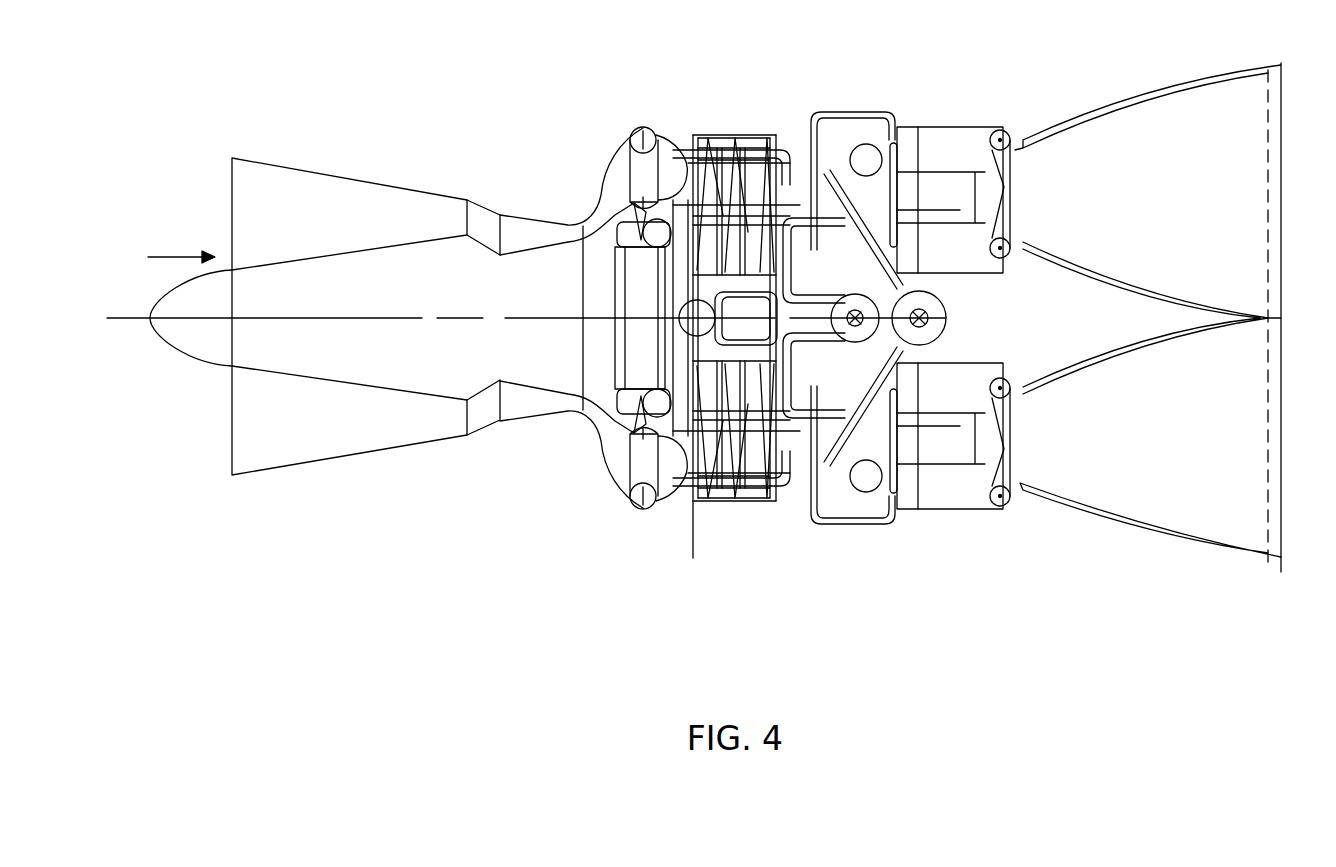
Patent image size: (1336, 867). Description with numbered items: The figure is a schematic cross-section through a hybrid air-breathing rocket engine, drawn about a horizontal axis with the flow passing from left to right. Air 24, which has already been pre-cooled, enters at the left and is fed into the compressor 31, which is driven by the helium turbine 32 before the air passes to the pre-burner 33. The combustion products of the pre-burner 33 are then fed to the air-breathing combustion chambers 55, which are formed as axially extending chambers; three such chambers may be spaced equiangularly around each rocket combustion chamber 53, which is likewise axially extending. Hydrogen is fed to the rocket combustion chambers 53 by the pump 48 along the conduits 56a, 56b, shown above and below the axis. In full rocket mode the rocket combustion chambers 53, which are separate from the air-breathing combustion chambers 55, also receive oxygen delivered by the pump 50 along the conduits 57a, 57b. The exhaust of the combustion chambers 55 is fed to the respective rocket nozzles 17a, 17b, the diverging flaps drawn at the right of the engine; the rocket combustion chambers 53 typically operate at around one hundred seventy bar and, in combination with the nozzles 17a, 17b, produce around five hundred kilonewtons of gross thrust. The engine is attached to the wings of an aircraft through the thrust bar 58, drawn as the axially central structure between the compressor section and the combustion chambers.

The air 24 is at (182, 256).
The compressor 31 is at (368, 186).
The helium turbine 32 is at (640, 278).
The pre-burner 33 is at (673, 150).
The thrust bar 58 is at (738, 292).
The conduit 57b is at (797, 172).
The conduit 57a is at (790, 478).
The conduit 56b is at (867, 180).
The conduit 56a is at (891, 371).
The pump 50 is at (853, 343).
The pump 48 is at (945, 313).
The rocket combustion chamber 53 is at (947, 137).
The air-breathing combustion chamber 55 is at (930, 137).
The rocket nozzle 17b is at (1100, 107).
The rocket nozzle 17a is at (1234, 557).